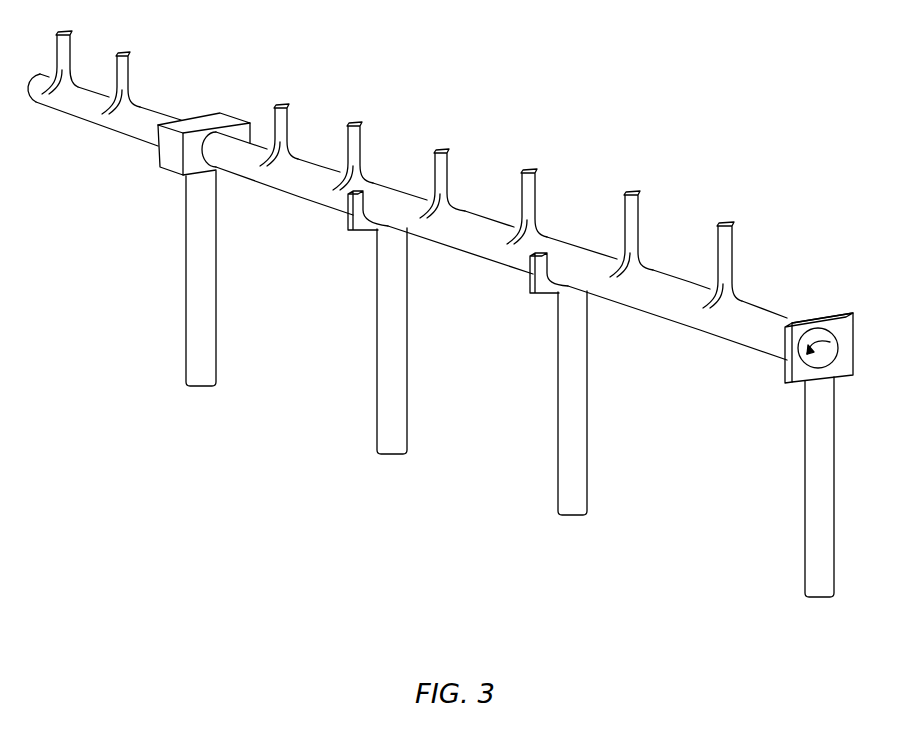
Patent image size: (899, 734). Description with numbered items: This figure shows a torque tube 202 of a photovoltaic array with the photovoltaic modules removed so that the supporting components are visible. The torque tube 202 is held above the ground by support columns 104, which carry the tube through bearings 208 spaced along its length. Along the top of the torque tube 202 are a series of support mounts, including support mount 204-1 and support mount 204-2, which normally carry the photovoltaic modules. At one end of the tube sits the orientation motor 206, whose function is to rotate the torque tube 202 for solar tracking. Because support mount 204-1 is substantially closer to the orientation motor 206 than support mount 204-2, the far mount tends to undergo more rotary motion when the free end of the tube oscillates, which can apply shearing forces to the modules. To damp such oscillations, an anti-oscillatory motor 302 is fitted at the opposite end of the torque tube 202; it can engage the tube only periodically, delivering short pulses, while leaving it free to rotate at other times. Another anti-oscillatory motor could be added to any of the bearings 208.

The torque tube 202 is at (80, 122).
The support mount 204-1 is at (449, 154).
The support mount 204-2 is at (733, 250).
The orientation motor 206 is at (167, 178).
The bearings 208 is at (366, 231).
The support columns 104 is at (186, 311).
The anti-oscillatory motor 302 is at (792, 383).